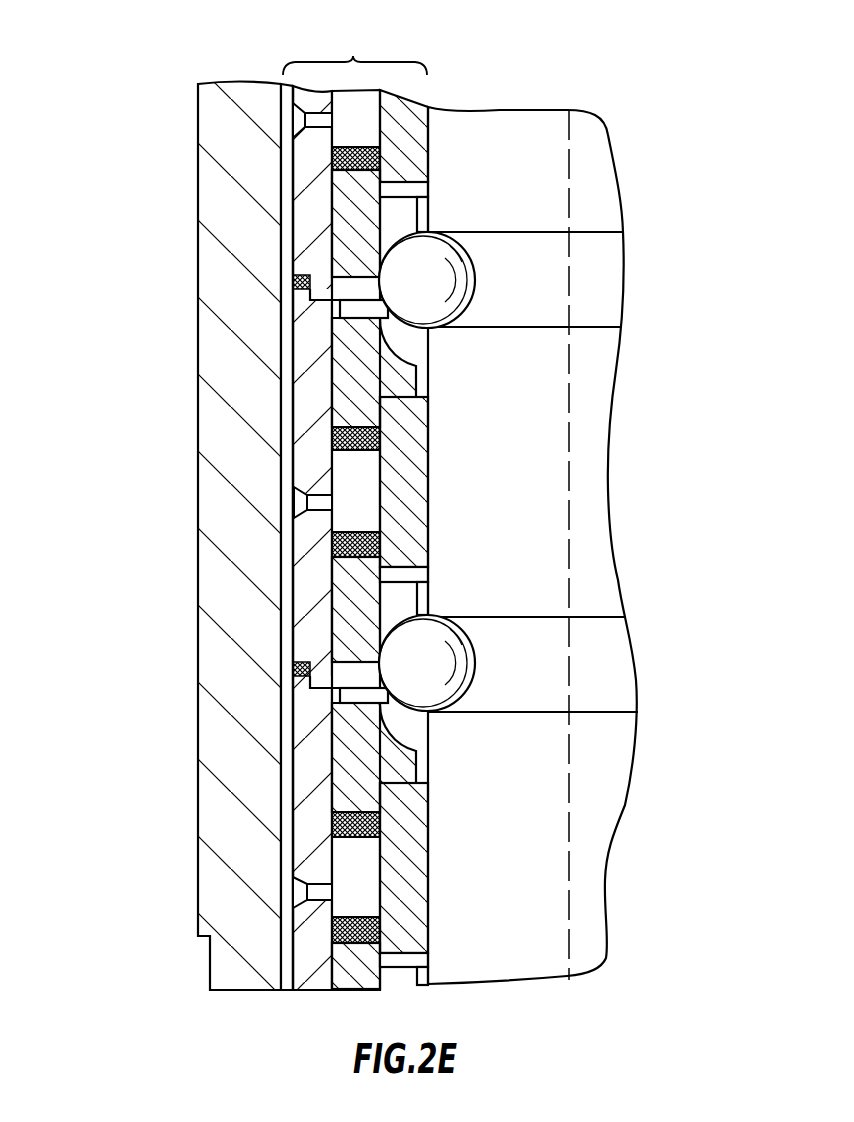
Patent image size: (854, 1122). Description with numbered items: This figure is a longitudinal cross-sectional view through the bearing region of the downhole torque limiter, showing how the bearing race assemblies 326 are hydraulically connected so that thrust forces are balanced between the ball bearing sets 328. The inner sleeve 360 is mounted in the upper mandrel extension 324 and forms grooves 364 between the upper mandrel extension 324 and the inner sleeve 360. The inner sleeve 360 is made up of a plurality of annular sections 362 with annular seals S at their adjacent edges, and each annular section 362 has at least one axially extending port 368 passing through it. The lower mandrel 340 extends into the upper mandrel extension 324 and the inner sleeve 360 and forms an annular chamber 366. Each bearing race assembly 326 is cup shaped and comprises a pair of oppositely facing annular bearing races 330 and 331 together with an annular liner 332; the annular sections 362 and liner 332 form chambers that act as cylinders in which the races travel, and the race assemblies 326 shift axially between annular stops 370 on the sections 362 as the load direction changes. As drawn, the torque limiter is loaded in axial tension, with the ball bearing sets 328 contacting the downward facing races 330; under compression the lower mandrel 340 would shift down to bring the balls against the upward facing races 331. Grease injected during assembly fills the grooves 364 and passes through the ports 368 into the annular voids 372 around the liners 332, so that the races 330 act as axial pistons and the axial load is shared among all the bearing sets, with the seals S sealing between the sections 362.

The upper mandrel extension 324 is at (213, 118).
The bearing and race assembly 326 is at (466, 358).
The ball bearing set 328 is at (465, 273).
The downward facing bearing race 330 is at (407, 215).
The upward facing bearing race 331 is at (410, 378).
The annular liner 332 is at (410, 127).
The lower mandrel 340 is at (530, 173).
The inner sleeve 360 is at (290, 593).
The annular section 362 is at (310, 226).
The groove 364 is at (287, 180).
The annular chamber 366 is at (353, 56).
The axially extending port 368 is at (310, 502).
The annular stop 370 is at (337, 311).
The annular void 372 is at (350, 462).
The annular seal S is at (290, 281).